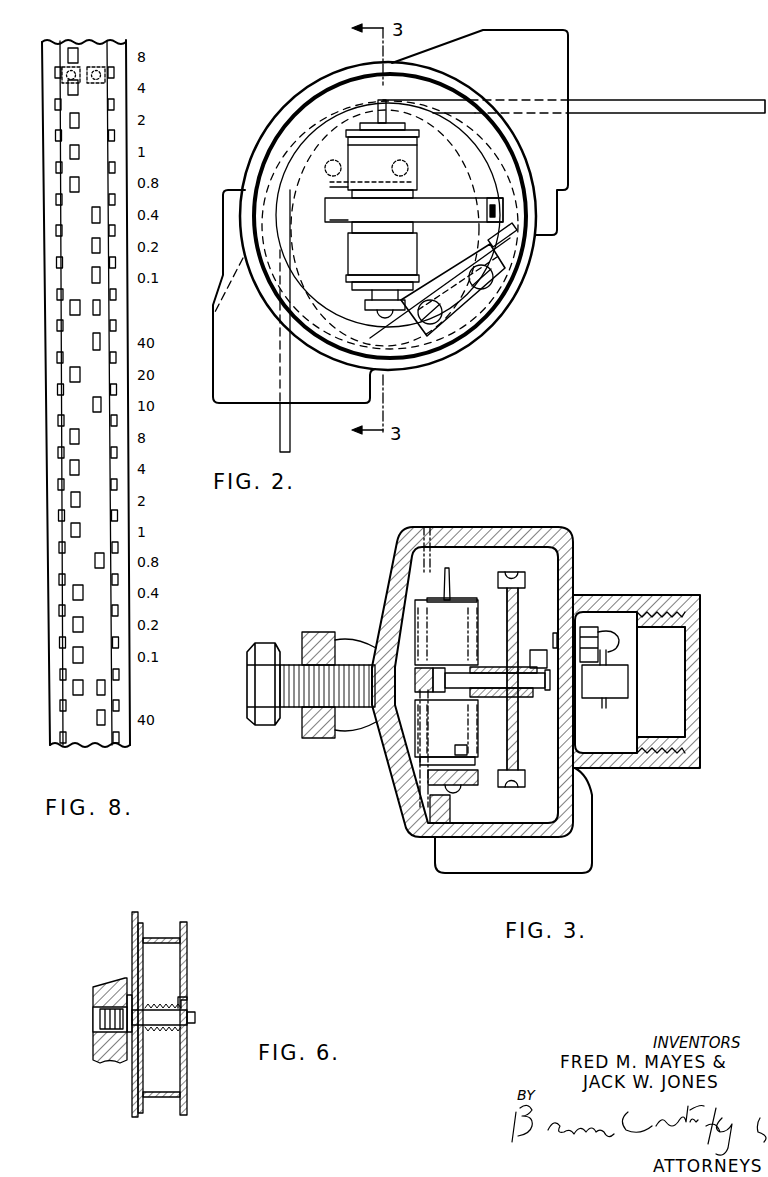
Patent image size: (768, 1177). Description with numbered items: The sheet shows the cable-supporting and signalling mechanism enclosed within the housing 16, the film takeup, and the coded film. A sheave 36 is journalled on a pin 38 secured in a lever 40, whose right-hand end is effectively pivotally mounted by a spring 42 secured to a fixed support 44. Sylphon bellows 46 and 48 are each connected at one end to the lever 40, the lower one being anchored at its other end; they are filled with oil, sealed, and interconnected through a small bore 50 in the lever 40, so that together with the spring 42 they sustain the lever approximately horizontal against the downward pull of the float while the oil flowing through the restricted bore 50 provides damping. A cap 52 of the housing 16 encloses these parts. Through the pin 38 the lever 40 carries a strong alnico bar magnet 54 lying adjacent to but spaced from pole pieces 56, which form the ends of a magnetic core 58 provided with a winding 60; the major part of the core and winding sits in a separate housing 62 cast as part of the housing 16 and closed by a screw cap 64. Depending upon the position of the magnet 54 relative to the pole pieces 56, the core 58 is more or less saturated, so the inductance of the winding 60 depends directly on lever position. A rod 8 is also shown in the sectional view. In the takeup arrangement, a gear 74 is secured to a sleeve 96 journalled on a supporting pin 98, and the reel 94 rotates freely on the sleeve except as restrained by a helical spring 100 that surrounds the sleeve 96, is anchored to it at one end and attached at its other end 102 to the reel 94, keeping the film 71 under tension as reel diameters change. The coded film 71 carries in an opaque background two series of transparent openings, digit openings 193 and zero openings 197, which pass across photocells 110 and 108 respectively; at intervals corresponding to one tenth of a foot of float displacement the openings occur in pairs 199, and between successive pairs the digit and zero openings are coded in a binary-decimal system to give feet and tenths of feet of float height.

In FIG. 2, the conduit rod 8 is at (280, 428).
In FIG. 3, the housing 16 is at (510, 527).
In FIG. 2, the sheave 36 is at (282, 282).
In FIG. 3, the sheave 36 is at (521, 787).
In FIG. 3, the pin 38 is at (465, 680).
In FIG. 2, the lever 40 is at (432, 218).
In FIG. 3, the lever 40 is at (420, 690).
In FIG. 2, the spring 42 is at (499, 197).
In FIG. 2, the fixed support 44 is at (470, 298).
In FIG. 2, the Sylphon bellows 46 is at (348, 255).
In FIG. 2, the Sylphon bellows 48 is at (415, 150).
In FIG. 3, the small bore 50 is at (416, 673).
In FIG. 3, the cap 52 is at (392, 590).
In FIG. 2, the bar magnet 54 is at (328, 192).
In FIG. 3, the bar magnet 54 is at (540, 650).
In FIG. 2, the pole pieces 56 is at (327, 172).
In FIG. 3, the pole pieces 56 is at (555, 633).
In FIG. 3, the core 58 is at (612, 655).
In FIG. 3, the winding 60 is at (594, 698).
In FIG. 3, the separate housing 62 is at (624, 596).
In FIG. 3, the screw cap 64 is at (700, 657).
In FIG. 8, the film 71 is at (50, 308).
In FIG. 6, the gear 74 is at (133, 1118).
In FIG. 6, the reel 94 is at (187, 1085).
In FIG. 6, the sleeve 96 is at (147, 1002).
In FIG. 6, the supporting pin 98 is at (196, 1014).
In FIG. 6, the helical spring 100 is at (152, 1028).
In FIG. 6, the other end 102 is at (187, 998).
In FIG. 8, the photocell 108 is at (68, 66).
In FIG. 8, the photocell 110 is at (88, 68).
In FIG. 8, the digit openings 193 is at (88, 55).
In FIG. 8, the zero openings 197 is at (71, 184).
In FIG. 8, the paired openings 199 is at (100, 306).